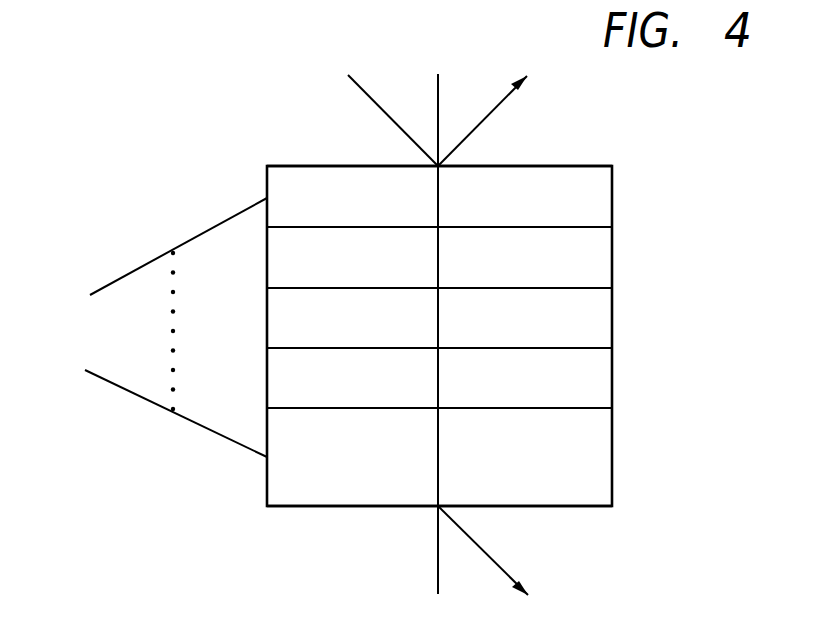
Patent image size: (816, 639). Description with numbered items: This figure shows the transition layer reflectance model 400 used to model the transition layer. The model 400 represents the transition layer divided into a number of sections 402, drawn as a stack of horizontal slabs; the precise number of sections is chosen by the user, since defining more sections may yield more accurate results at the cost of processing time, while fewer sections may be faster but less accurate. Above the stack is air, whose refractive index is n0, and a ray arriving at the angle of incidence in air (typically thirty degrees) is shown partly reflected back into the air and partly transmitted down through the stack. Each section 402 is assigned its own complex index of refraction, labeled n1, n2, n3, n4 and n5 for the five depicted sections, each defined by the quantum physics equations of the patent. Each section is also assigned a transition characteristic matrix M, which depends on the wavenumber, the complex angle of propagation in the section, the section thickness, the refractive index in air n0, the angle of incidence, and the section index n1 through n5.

The transition layer reflectance model 400 is at (221, 134).
The sections 402 is at (157, 327).
The refractive index in air n0 is at (439, 146).
The complex index of refraction of the first section n1 is at (439, 204).
The complex index of refraction of the second section n2 is at (439, 265).
The complex index of refraction of the third section n3 is at (439, 325).
The complex index of refraction of the fourth section n4 is at (439, 385).
The complex index of refraction of the fifth section n5 is at (439, 473).